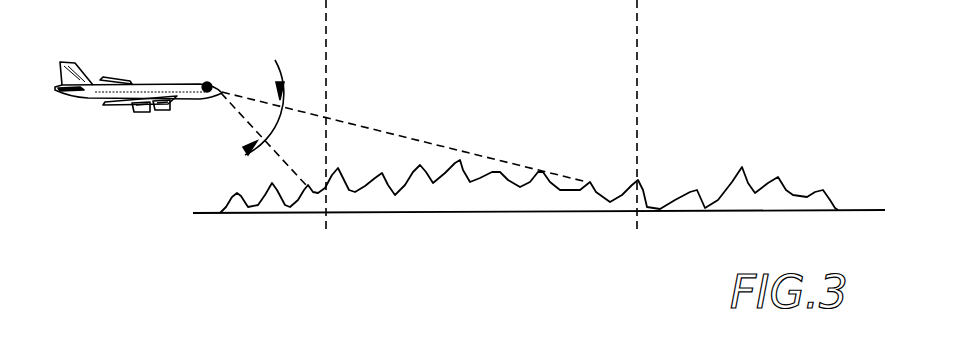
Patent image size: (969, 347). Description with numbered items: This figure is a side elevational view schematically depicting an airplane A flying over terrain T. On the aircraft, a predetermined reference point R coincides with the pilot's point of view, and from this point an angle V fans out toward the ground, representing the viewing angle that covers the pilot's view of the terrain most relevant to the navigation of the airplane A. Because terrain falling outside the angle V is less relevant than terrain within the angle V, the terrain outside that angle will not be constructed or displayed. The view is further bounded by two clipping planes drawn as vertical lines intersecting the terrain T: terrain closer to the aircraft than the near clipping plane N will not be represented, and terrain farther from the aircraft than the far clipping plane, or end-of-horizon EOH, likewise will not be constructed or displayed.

The airplane A is at (97, 99).
The predetermined reference point R is at (208, 82).
The viewing angle V is at (241, 152).
The near clipping plane N is at (326, 132).
The terrain T is at (470, 182).
The end-of-horizon EOH is at (641, 130).